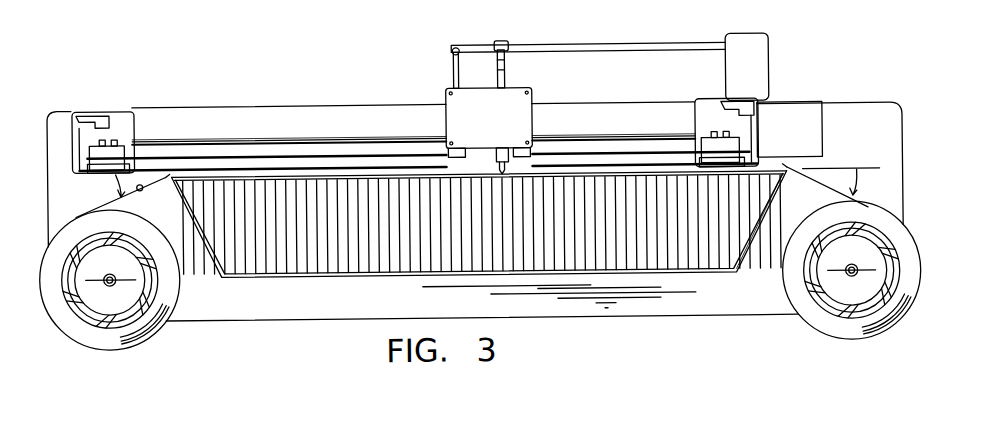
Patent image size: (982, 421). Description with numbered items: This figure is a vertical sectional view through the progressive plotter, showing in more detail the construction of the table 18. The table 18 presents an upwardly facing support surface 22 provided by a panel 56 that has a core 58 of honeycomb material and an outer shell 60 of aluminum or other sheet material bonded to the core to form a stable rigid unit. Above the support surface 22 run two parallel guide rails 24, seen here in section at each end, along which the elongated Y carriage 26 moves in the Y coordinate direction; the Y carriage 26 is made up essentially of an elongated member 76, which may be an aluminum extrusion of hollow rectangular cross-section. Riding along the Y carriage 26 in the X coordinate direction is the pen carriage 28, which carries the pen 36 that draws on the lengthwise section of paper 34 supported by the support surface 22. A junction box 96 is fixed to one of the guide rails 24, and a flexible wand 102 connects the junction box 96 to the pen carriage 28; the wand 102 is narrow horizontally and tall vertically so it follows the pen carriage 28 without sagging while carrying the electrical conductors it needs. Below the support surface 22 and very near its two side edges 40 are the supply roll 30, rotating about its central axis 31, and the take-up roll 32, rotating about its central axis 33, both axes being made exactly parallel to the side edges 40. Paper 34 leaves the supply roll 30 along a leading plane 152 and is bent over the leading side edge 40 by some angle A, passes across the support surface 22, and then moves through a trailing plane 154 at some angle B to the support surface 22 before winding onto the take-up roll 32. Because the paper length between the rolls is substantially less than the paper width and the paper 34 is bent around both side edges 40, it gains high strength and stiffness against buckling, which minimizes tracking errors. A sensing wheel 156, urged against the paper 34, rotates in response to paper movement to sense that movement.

The table 18 is at (846, 106).
The support surface 22 is at (313, 172).
The guide rail 24 is at (118, 108).
The Y carriage 26 is at (245, 146).
The pen carriage 28 is at (447, 95).
The supply roll 30 is at (920, 253).
The central axis of supply roll 31 is at (862, 278).
The take-up roll 32 is at (40, 268).
The central axis of take-up roll 33 is at (122, 283).
The paper 34 is at (800, 177).
The pen 36 is at (502, 40).
The side edge 40 is at (166, 174).
The panel 56 is at (607, 172).
The core 58 is at (360, 177).
The outer shell 60 is at (353, 277).
The elongated member 76 is at (205, 141).
The junction box 96 is at (770, 62).
The flexible wand 102 is at (615, 45).
The leading plane 152 is at (875, 198).
The trailing plane 154 is at (143, 187).
The sensing wheel 156 is at (790, 166).
The angle A is at (841, 182).
The angle B is at (115, 190).